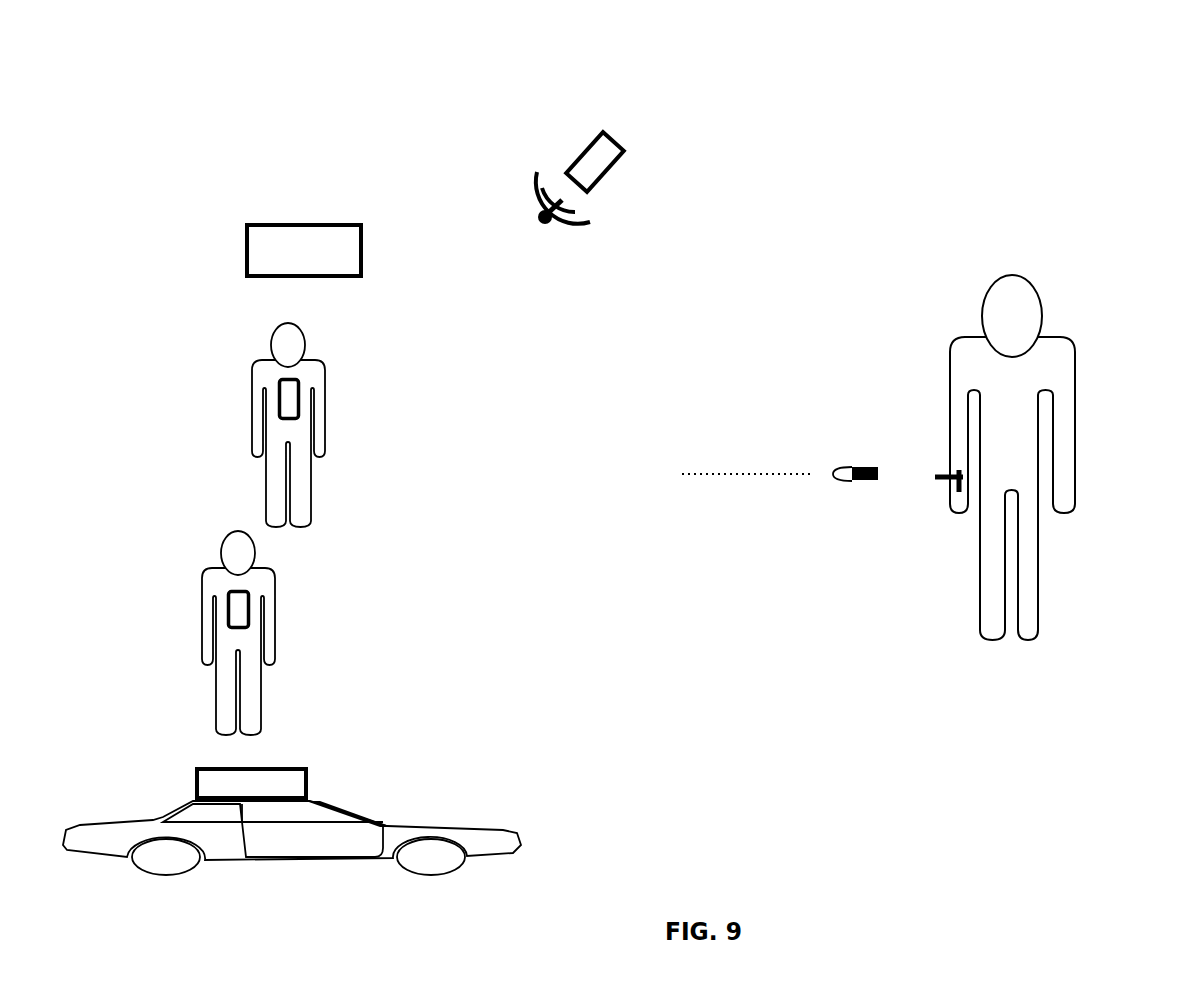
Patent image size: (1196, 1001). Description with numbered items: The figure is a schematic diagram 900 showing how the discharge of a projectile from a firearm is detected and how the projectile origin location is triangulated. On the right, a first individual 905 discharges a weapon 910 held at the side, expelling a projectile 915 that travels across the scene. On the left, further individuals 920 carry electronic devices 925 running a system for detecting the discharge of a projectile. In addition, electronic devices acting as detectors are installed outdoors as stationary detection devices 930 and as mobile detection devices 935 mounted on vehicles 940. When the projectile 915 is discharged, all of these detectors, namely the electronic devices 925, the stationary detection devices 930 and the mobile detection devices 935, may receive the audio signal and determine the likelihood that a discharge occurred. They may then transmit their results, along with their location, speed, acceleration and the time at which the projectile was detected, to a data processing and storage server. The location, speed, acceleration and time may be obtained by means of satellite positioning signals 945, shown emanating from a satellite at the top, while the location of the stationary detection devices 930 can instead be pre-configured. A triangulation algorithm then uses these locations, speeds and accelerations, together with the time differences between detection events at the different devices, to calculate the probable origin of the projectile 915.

The schematic diagram 900 is at (222, 73).
The first individual 905 is at (1053, 605).
The weapon 910 is at (937, 497).
The projectile 915 is at (853, 457).
The further individuals 920 is at (287, 583).
The electronic devices 925 is at (234, 601).
The stationary detection devices 930 is at (233, 263).
The mobile detection devices 935 is at (263, 768).
The vehicles 940 is at (340, 805).
The satellite positioning signals 945 is at (614, 210).